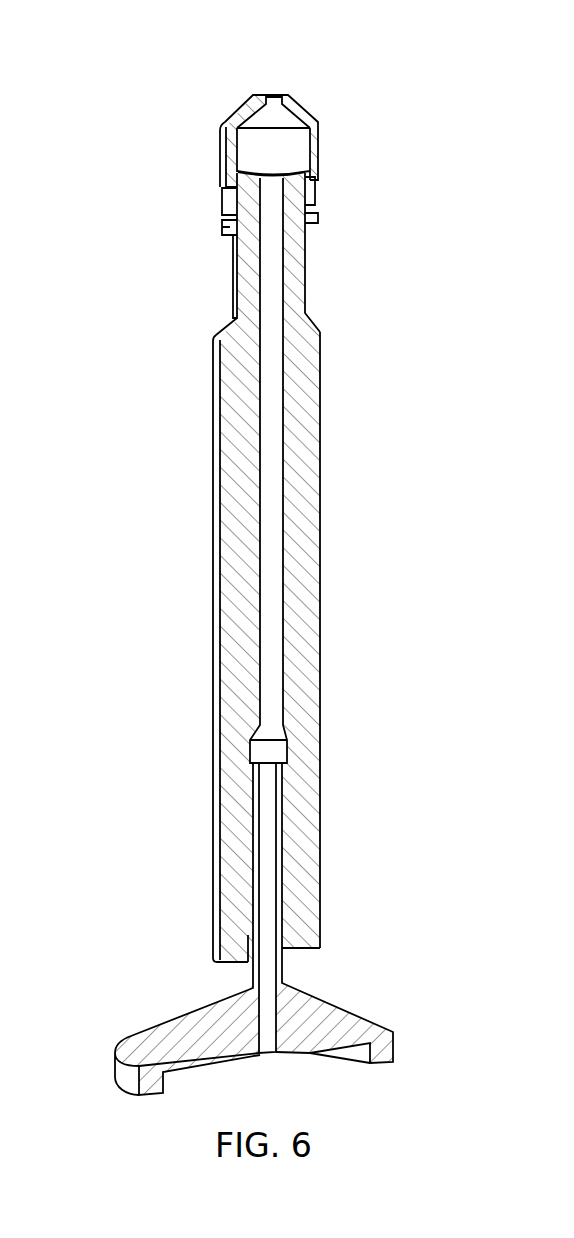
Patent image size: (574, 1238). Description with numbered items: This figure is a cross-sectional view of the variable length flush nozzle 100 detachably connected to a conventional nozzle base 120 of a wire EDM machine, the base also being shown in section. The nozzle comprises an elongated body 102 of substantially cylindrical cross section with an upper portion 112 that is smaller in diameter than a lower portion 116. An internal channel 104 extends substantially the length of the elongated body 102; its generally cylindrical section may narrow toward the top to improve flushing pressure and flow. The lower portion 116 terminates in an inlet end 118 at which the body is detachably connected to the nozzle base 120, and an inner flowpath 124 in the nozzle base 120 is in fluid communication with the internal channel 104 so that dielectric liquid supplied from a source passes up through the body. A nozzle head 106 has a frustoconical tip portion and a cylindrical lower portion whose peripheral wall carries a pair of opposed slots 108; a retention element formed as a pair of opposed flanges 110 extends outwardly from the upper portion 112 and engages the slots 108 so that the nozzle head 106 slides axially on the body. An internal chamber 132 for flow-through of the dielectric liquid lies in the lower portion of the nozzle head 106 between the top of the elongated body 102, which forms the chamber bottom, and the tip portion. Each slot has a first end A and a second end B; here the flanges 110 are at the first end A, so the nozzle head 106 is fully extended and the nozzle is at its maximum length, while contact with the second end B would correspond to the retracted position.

The variable length flush nozzle 100 is at (399, 356).
The elongated body 102 is at (322, 702).
The internal channel 104 is at (276, 585).
The nozzle head 106 is at (322, 139).
The pair of opposed slots 108 is at (224, 198).
The pair of opposed flanges 110 is at (223, 226).
The upper portion 112 is at (305, 284).
The lower portion 116 is at (215, 526).
The inlet end 118 is at (303, 952).
The nozzle base 120 is at (369, 1009).
The inner flowpath 124 is at (262, 1055).
The internal chamber 132 is at (262, 146).
The first end A is at (313, 221).
The second end B is at (310, 182).